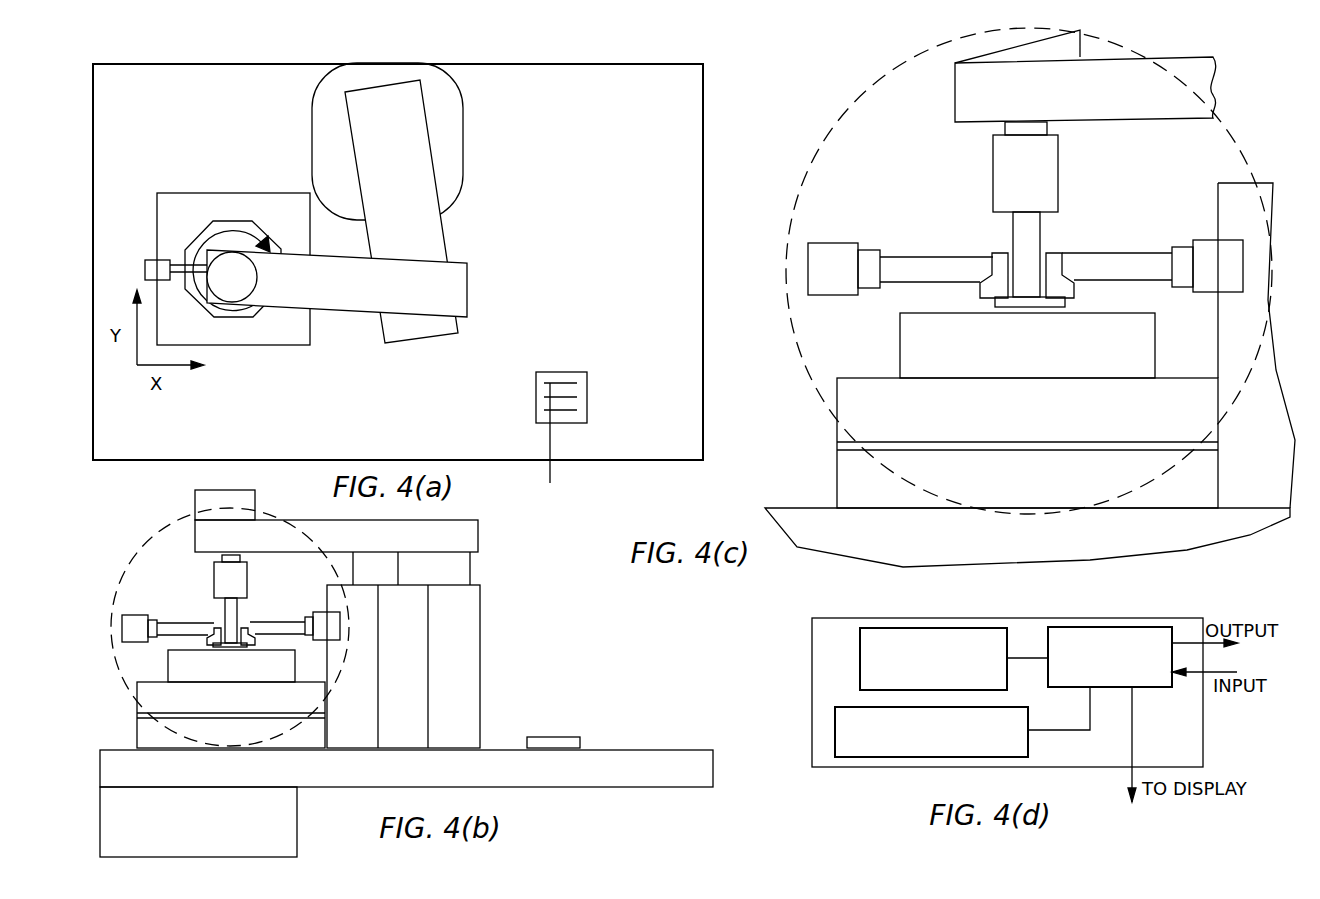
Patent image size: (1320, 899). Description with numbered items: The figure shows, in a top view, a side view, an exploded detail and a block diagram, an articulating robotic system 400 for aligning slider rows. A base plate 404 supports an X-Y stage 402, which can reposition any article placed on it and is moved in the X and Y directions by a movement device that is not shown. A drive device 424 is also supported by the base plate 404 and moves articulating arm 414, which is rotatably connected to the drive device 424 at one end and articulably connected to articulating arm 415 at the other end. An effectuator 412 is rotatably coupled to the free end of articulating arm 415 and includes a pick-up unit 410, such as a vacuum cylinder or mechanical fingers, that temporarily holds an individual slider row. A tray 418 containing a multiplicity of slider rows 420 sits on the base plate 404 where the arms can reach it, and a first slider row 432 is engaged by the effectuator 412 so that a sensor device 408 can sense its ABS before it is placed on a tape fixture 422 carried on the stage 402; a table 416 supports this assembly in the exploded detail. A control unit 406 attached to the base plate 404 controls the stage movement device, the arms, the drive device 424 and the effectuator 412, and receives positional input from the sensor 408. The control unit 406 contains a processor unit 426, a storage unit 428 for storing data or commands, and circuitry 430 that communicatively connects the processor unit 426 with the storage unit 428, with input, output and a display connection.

In FIG. 4A, the articulating robotic system 400 is at (756, 49).
In FIG. 4A, the X-Y stage 402 is at (157, 217).
In FIG. 4C, the X-Y stage 402 is at (837, 430).
In FIG. 4A, the base plate 404 is at (703, 127).
In FIG. 4B, the base plate 404 is at (713, 757).
In FIG. 4B, the control unit 406 is at (100, 817).
In FIG. 4D, the control unit 406 is at (812, 658).
In FIG. 4C, the sensor device 408 is at (838, 243).
In FIG. 4C, the pick-up unit 410 is at (993, 167).
In FIG. 4C, the effectuator 412 is at (1013, 237).
In FIG. 4A, the articulating arm 414 is at (443, 227).
In FIG. 4A, the articulating arm 415 is at (242, 302).
In FIG. 4C, the table 416 is at (900, 342).
In FIG. 4A, the tray 418 is at (587, 397).
In FIG. 4A, the slider rows 420 is at (573, 410).
In FIG. 4A, the tape fixture 422 is at (222, 222).
In FIG. 4A, the drive device 424 is at (457, 88).
In FIG. 4B, the drive device 424 is at (480, 643).
In FIG. 4D, the processor unit 426 is at (925, 628).
In FIG. 4D, the storage unit 428 is at (835, 737).
In FIG. 4D, the circuitry 430 is at (1108, 627).
In FIG. 4A, the first slider row 432 is at (539, 448).